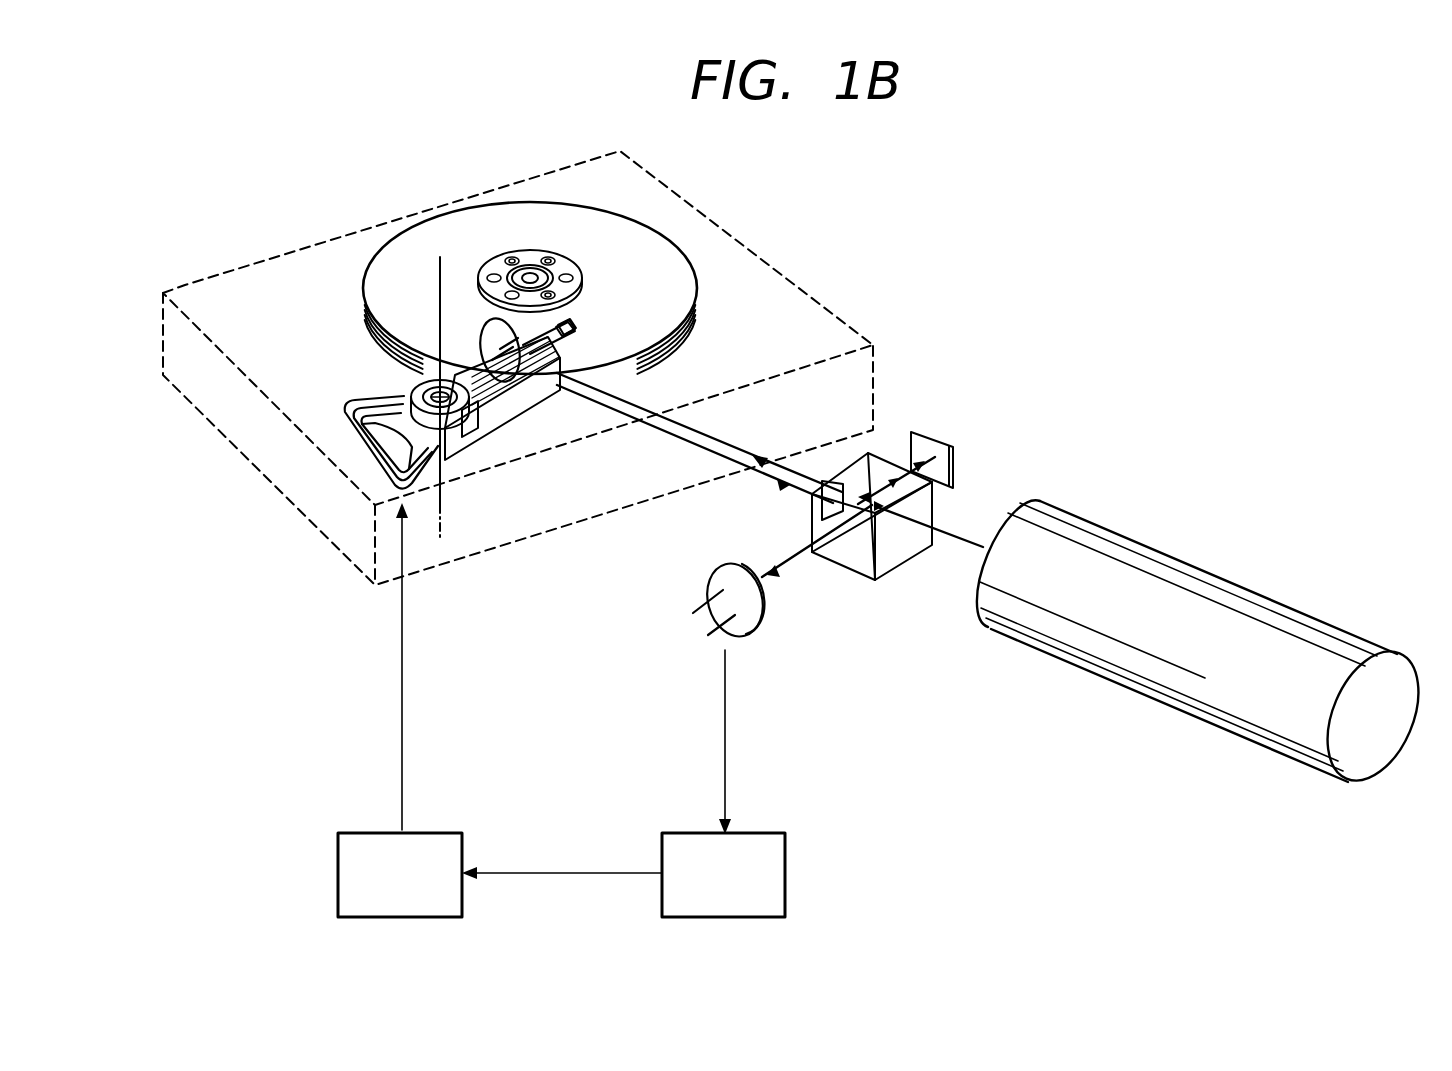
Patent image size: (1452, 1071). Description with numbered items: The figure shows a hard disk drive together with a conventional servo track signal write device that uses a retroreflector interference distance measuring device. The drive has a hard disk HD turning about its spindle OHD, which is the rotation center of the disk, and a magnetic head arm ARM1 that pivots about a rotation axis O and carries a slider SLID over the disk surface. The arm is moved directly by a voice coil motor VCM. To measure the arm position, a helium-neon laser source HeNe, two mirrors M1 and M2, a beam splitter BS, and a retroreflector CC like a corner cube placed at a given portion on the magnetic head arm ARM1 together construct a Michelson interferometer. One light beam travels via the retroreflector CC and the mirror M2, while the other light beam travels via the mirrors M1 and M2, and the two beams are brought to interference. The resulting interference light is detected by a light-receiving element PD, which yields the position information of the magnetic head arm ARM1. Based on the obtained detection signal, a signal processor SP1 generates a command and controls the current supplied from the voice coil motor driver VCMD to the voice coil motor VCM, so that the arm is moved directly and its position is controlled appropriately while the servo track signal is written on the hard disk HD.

The hard disk HD is at (633, 238).
The spindle OHD is at (531, 278).
The rotation axis O is at (440, 278).
The voice coil motor VCM is at (368, 405).
The magnetic head arm ARM1 is at (560, 383).
The retroreflector CC is at (518, 402).
The slider SLID is at (568, 333).
The beam splitter BS is at (907, 563).
The mirror M1 is at (950, 434).
The mirror M2 is at (818, 507).
The light-receiving element PD is at (765, 613).
The laser source HeNe is at (1190, 561).
The voice coil motor driver VCMD is at (400, 710).
The signal processor SP1 is at (623, 783).